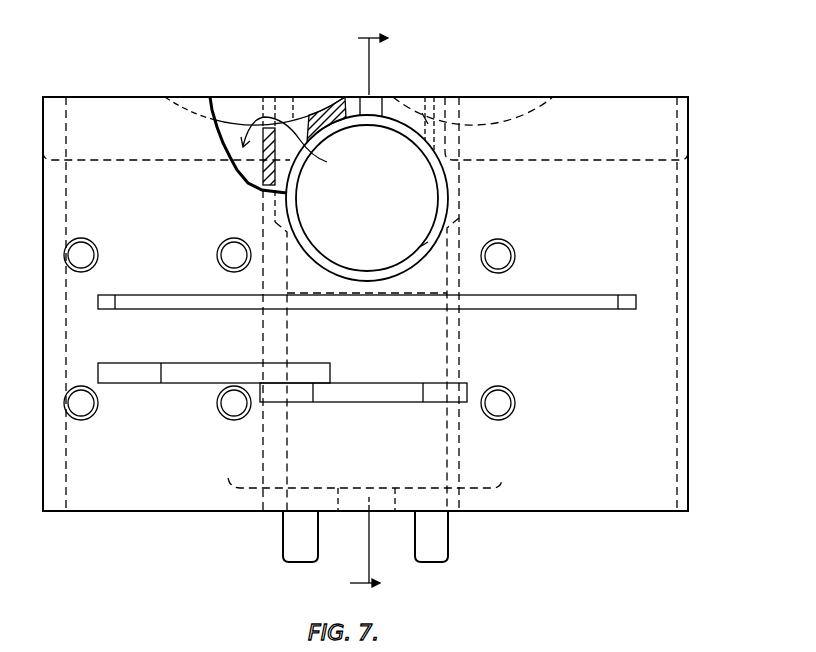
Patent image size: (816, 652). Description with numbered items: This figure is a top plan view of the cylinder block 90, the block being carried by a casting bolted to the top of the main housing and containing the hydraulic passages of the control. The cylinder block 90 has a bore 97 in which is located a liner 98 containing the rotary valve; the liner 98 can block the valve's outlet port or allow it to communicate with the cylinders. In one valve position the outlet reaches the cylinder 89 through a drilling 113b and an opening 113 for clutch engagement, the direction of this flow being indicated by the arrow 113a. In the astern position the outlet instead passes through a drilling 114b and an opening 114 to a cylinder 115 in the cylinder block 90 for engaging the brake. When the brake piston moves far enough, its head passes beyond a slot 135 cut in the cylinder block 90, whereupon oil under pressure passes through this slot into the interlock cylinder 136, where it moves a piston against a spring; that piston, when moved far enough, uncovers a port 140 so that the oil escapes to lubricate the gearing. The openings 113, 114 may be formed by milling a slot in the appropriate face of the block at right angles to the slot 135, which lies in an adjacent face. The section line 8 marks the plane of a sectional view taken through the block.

The section line 8- 8 is at (375, 314).
The cylinder 89 is at (224, 142).
The cylinder block 90 is at (622, 490).
The bore 97 is at (337, 245).
The liner 98 is at (385, 118).
The opening 113 is at (203, 97).
The arrow 113a is at (282, 86).
The drilling 113b is at (305, 118).
The opening 114 is at (490, 125).
The drilling 114b is at (428, 98).
The cylinder 115 is at (676, 97).
The slot 135 is at (513, 302).
The interlock cylinder 136 is at (450, 443).
The port 140 is at (327, 393).